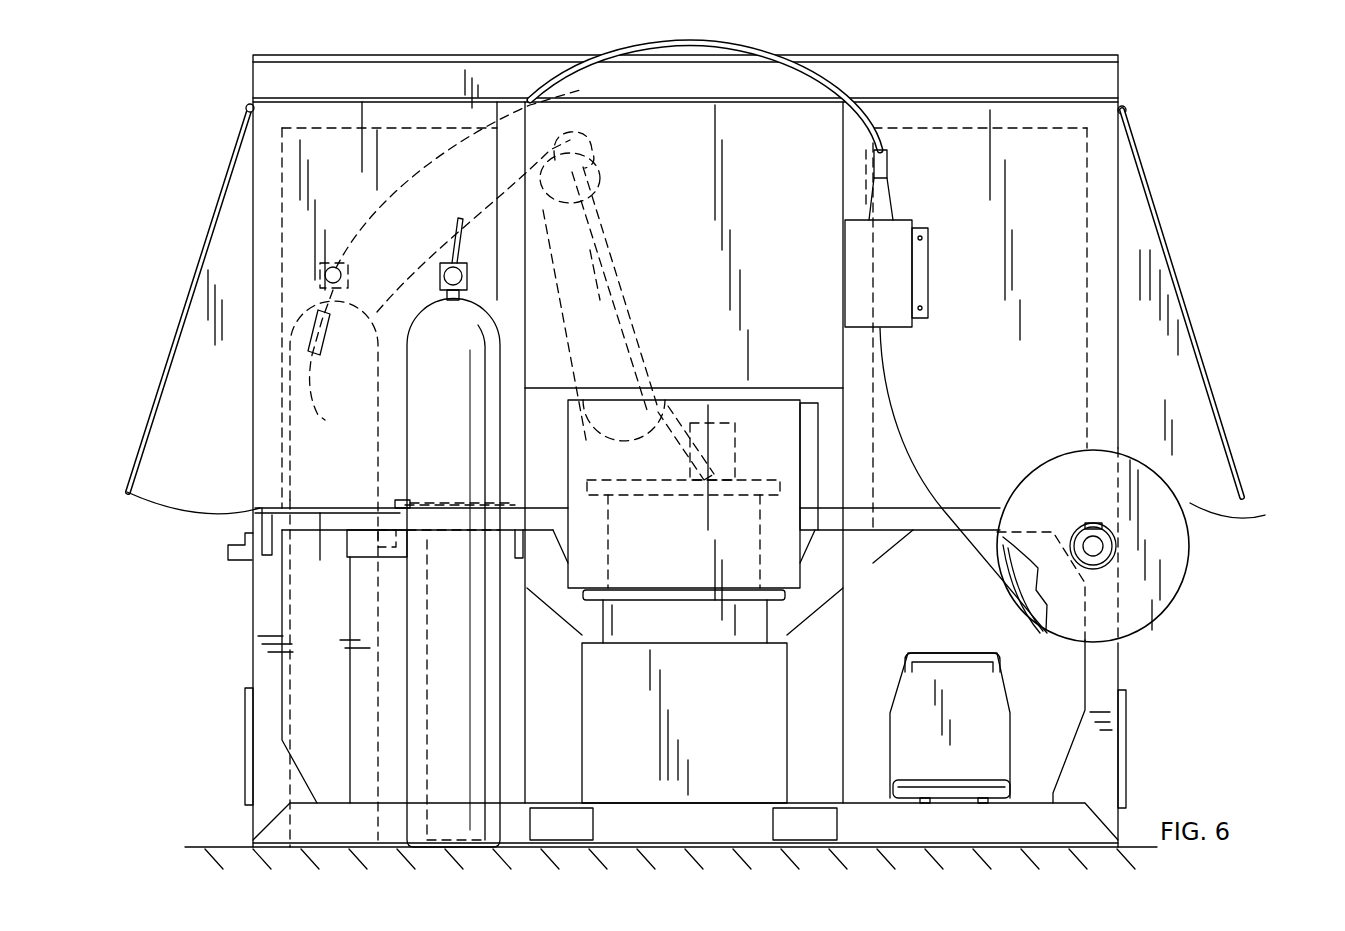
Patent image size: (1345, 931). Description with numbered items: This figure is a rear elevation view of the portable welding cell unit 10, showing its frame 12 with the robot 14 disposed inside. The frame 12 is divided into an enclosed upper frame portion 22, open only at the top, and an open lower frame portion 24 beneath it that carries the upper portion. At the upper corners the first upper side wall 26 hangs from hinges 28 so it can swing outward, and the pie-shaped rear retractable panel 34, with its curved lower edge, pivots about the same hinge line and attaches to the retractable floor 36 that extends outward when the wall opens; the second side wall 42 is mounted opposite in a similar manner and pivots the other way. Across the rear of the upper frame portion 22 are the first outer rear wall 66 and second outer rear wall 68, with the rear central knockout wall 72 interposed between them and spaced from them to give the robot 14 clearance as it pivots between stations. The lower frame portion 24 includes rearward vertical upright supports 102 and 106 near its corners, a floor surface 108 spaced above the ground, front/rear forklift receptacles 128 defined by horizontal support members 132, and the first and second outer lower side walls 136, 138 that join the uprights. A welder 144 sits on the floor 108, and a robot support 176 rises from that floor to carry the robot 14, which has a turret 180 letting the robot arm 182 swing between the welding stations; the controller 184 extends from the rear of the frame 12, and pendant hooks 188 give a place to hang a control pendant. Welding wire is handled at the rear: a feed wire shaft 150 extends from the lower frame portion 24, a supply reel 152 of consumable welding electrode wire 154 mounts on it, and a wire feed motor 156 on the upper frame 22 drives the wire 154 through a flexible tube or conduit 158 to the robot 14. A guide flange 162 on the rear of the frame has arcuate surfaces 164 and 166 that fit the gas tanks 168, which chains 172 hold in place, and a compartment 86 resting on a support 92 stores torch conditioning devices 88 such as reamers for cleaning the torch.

The portable welding cell unit 10 is at (1215, 123).
The frame 12 is at (1090, 95).
The robot 14 is at (606, 232).
The upper frame portion 22 is at (220, 133).
The lower frame portion 24 is at (235, 665).
The first upper side wall 26 is at (1200, 328).
The hinges 28 is at (1127, 111).
The rear retractable panel 34 is at (1190, 425).
The retractable floor 36 is at (1215, 503).
The second side wall 42 is at (185, 307).
The first outer rear wall 66 is at (1055, 245).
The second outer rear wall 68 is at (300, 185).
The rear central knockout wall 72 is at (748, 135).
The compartment 86 is at (352, 530).
The torch conditioning devices 88 is at (378, 547).
The support 92 is at (355, 677).
The rearward vertical upright support 102 is at (1105, 658).
The rearward vertical upright support 106 is at (262, 615).
The floor surface 108 is at (1025, 800).
The front/rear forklift receptacles 128 is at (555, 820).
The horizontal support members 132 is at (940, 820).
The first outer lower side wall 136 is at (1125, 768).
The second outer lower side wall 138 is at (245, 745).
The welder 144 is at (1035, 736).
The feed wire shaft 150 is at (1105, 545).
The supply reel 152 is at (1170, 580).
The consumable welding electrode wire 154 is at (970, 553).
The wire feed motor 156 is at (900, 275).
The flexible tube or conduit 158 is at (850, 82).
The guide flange 162 is at (272, 505).
The arcuate surface 164 is at (317, 560).
The arcuate surface 166 is at (400, 503).
The tanks 168 is at (300, 400).
The chains 172 is at (455, 505).
The robot support 176 is at (710, 620).
The turret 180 is at (772, 477).
The robot arm 182 is at (620, 257).
The controller 184 is at (765, 410).
The pendant hooks 188 is at (228, 555).